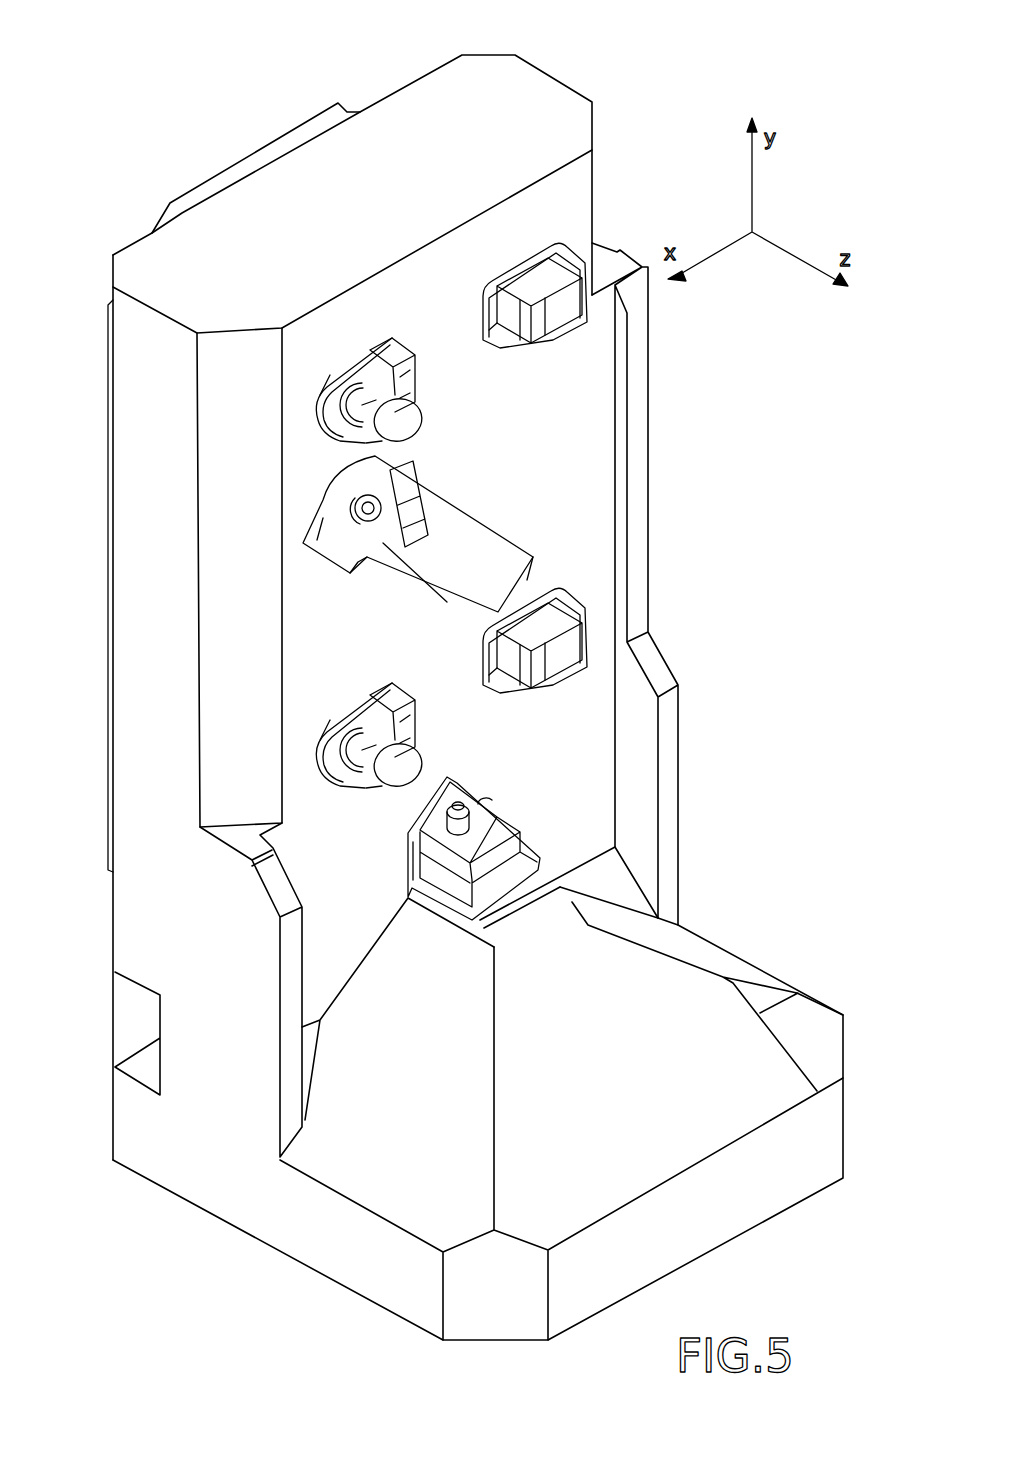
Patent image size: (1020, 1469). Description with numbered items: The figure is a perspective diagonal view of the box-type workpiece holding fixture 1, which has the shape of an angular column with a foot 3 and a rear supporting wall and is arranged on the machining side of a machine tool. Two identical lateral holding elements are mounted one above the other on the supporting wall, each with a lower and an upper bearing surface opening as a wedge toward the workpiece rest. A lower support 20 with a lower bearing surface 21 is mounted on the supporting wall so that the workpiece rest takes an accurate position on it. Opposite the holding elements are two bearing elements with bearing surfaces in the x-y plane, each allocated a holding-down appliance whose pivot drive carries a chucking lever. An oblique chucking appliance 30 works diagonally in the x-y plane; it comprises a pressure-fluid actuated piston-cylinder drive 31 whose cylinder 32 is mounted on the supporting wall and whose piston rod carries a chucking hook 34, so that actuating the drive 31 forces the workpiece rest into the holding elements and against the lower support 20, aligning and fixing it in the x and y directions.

The workpiece holding fixture 1 is at (565, 88).
The foot 3 is at (397, 1143).
The lower support 20 is at (488, 846).
The lower bearing surface 21 is at (493, 802).
The oblique chucking appliance 30 is at (448, 532).
The piston-cylinder drive 31 is at (500, 533).
The cylinder 32 is at (438, 562).
The chucking hook 34 is at (397, 515).